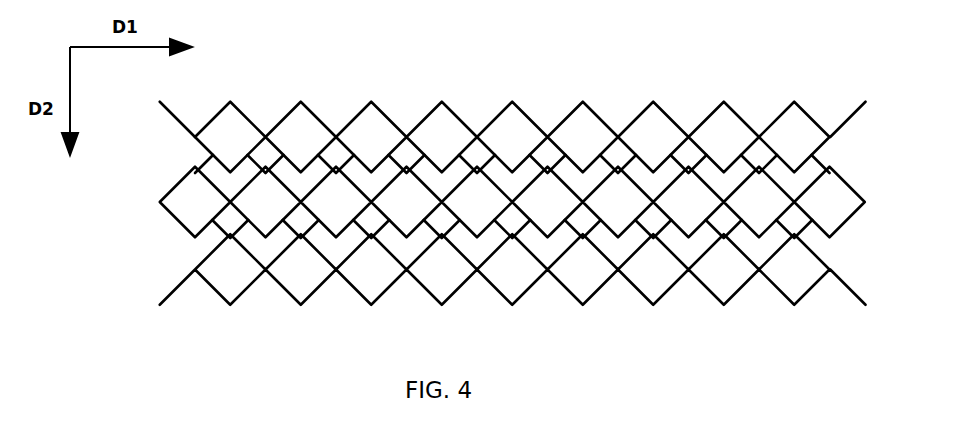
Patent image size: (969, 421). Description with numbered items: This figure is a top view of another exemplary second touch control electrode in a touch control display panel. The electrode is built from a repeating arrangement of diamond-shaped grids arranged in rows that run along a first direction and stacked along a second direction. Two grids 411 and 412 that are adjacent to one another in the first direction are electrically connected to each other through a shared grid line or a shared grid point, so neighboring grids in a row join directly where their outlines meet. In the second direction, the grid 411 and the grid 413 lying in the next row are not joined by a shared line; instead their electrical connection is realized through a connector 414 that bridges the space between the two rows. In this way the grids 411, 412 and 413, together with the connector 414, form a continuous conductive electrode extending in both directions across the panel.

The grid 411 is at (231, 120).
The grid 412 is at (307, 125).
The grid 413 is at (199, 213).
The connector 414 is at (208, 167).